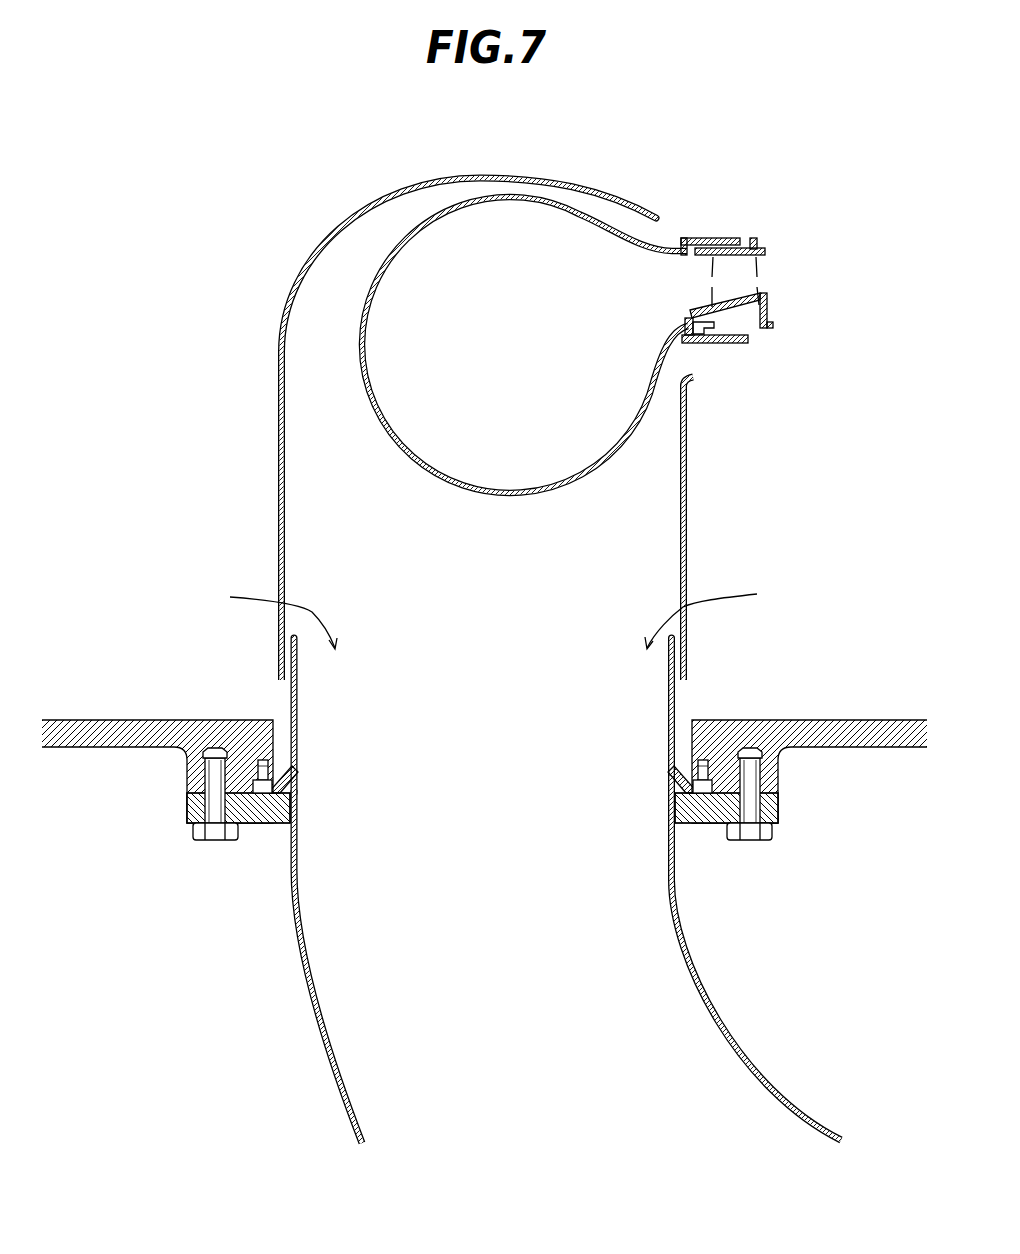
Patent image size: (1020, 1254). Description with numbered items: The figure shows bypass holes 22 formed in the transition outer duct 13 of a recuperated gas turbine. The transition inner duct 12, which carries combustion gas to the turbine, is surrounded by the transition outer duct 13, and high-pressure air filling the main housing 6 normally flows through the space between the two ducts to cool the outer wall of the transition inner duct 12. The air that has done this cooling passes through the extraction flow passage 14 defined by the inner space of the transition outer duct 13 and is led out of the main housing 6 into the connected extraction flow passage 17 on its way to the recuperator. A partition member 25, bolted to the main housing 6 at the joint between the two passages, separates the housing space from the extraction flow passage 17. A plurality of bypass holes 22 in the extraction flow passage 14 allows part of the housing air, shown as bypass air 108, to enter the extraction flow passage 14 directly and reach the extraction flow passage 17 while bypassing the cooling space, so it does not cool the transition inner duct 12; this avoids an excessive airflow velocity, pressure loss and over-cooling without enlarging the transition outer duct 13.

The main housing 6 is at (95, 748).
The transition inner duct 12 is at (510, 496).
The transition outer duct 13 is at (297, 291).
The extraction flow passage 14 is at (279, 527).
The extraction flow passage 17 is at (318, 1000).
The bypass holes 22 is at (286, 597).
The partition member 25 is at (299, 724).
The bypass air 108 is at (518, 630).